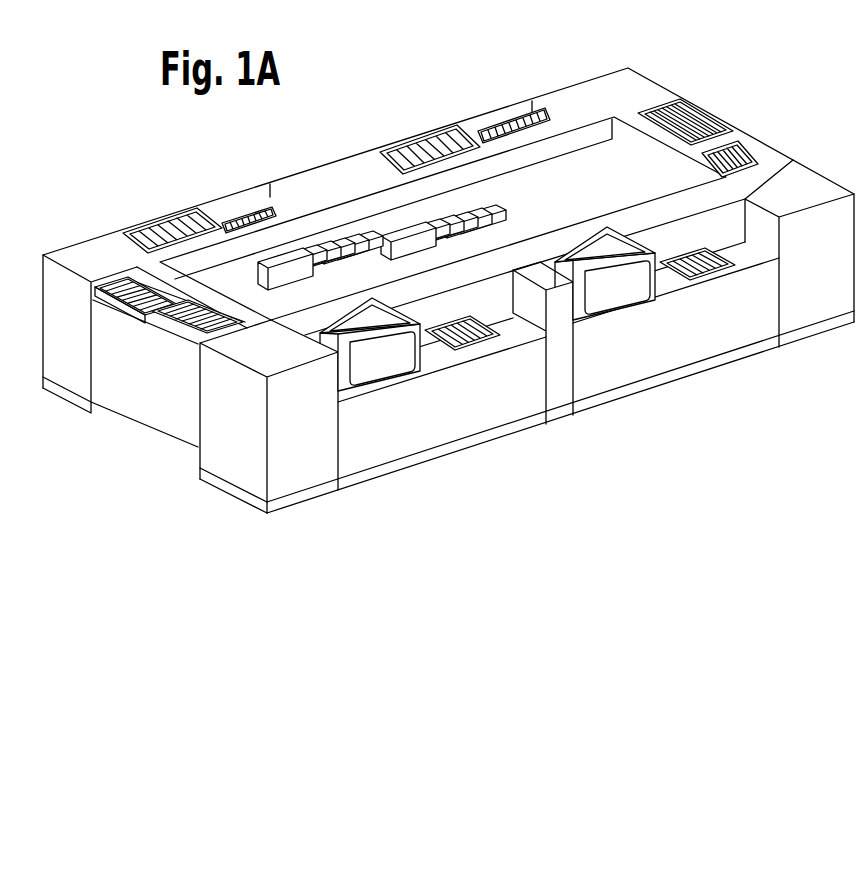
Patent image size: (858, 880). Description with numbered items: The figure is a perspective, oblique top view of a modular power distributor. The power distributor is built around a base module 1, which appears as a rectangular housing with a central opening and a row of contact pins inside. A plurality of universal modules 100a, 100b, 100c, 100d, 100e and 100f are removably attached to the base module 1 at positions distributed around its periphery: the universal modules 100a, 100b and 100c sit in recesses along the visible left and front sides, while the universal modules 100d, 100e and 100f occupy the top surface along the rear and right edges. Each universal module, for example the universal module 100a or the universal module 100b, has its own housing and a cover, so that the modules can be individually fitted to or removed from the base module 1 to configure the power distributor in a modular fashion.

The base module 1 is at (543, 188).
The universal module 100a is at (150, 406).
The universal module 100b is at (433, 440).
The universal module 100c is at (642, 378).
The universal module 100d is at (729, 110).
The universal module 100e is at (429, 124).
The universal module 100f is at (152, 214).